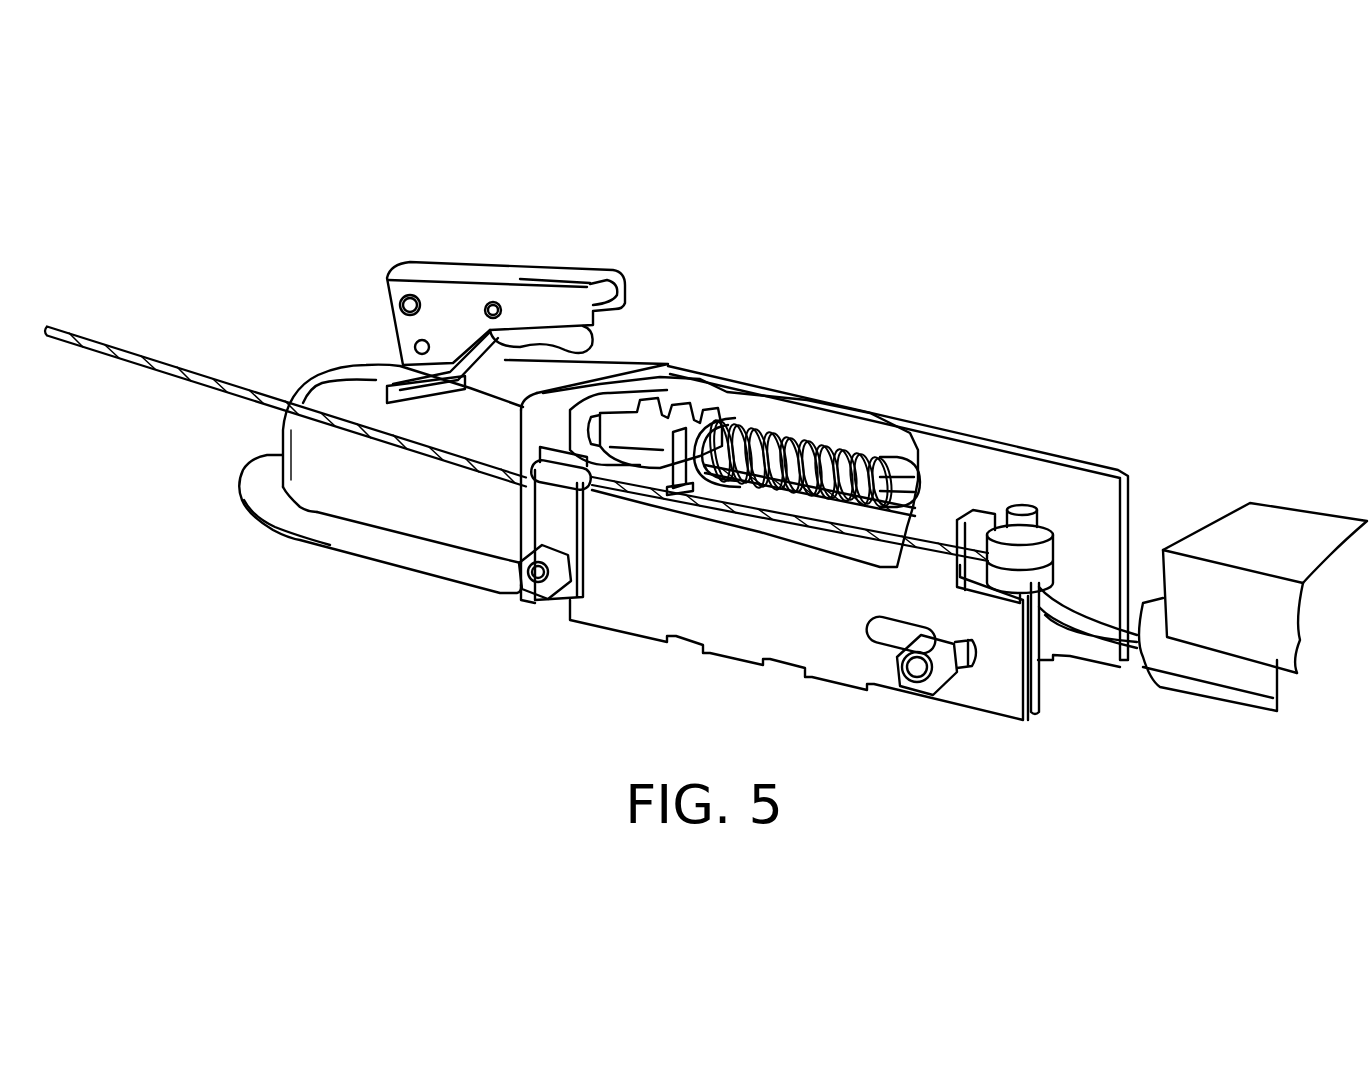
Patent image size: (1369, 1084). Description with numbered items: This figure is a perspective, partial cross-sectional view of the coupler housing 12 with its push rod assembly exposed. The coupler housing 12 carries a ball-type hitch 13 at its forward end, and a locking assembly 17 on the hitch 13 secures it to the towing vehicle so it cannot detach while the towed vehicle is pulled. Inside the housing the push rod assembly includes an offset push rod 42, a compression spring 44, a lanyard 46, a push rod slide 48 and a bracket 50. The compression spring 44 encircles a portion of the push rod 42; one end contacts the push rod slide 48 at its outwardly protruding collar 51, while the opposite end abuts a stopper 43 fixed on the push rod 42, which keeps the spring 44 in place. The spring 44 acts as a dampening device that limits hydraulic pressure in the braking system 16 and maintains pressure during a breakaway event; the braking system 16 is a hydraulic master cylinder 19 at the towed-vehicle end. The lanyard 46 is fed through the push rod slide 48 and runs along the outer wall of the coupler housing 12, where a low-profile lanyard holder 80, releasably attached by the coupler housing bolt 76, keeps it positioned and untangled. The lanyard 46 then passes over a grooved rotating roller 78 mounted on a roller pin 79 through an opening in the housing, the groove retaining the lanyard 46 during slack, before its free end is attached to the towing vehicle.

The coupler housing 12 is at (300, 525).
The ball-type hitch 13 is at (360, 368).
The braking system 16 is at (1296, 538).
The locking assembly 17 is at (432, 268).
The hydraulic master cylinder 19 is at (1237, 693).
The push rod 42 is at (910, 493).
The stopper 43 is at (887, 466).
The compression spring 44 is at (798, 443).
The lanyard 46 is at (163, 366).
The push rod slide 48 is at (650, 397).
The bracket 50 is at (723, 410).
The collar 51 is at (743, 420).
The coupler housing bolt 76 is at (540, 594).
The rotating roller 78 is at (1047, 517).
The roller pin 79 is at (1020, 503).
The lanyard holder 80 is at (547, 510).